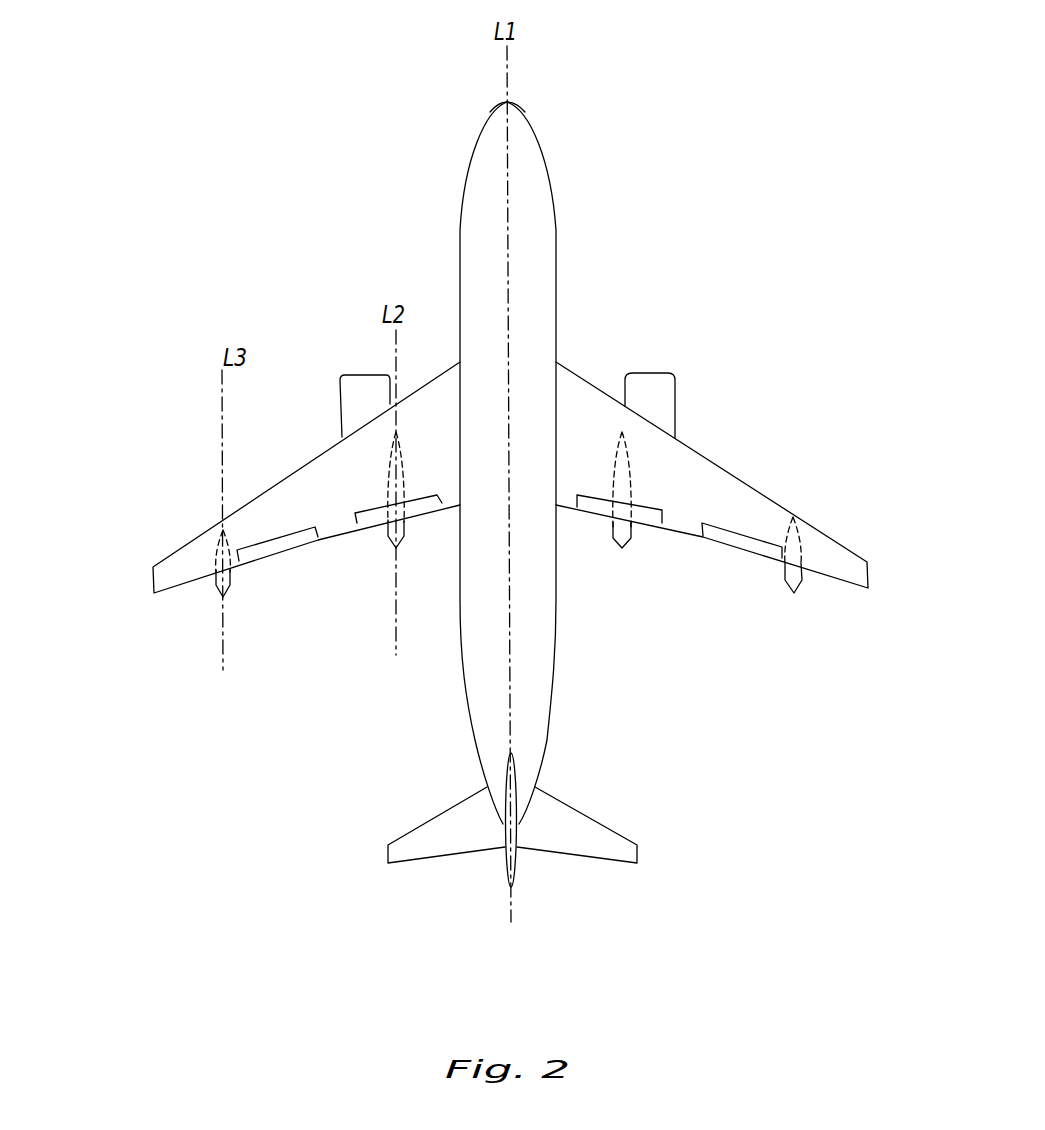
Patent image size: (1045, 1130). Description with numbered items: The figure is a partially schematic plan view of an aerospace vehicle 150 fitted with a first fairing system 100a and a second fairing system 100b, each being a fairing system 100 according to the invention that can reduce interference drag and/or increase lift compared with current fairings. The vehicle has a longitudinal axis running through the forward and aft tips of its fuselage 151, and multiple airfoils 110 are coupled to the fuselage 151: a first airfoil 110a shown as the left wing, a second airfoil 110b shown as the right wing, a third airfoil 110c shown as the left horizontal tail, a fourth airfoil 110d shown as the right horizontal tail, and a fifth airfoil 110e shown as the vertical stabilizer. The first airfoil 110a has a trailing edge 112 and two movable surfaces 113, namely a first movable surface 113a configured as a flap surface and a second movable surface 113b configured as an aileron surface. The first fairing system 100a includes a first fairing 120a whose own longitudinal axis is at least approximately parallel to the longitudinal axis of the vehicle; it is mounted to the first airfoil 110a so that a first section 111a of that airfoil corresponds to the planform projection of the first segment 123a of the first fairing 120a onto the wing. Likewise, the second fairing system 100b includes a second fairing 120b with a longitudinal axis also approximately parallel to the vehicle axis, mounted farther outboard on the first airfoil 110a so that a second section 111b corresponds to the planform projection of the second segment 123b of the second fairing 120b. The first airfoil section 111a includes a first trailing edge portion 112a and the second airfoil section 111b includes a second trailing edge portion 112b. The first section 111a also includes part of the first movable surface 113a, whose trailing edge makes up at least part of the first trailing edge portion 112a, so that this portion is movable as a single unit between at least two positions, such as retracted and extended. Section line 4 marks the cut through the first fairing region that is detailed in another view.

The fairing system 100 is at (321, 130).
The first fairing system 100a is at (345, 300).
The second fairing system 100b is at (181, 403).
The airfoils 110 is at (778, 708).
The first airfoil 110a is at (175, 584).
The second airfoil 110b is at (728, 492).
The third airfoil 110c is at (424, 850).
The fourth airfoil 110d is at (591, 828).
The fifth airfoil 110e is at (541, 878).
The first section of the first airfoil 111a is at (388, 498).
The second section of the first airfoil 111b is at (220, 560).
The trailing edge 112 is at (330, 550).
The first trailing edge portion 112a is at (402, 528).
The second trailing edge portion 112b is at (232, 594).
The movable surfaces 113 is at (340, 688).
The first movable surface 113a is at (375, 528).
The second movable surface 113b is at (276, 548).
The first fairing 120a is at (402, 545).
The second fairing 120b is at (212, 594).
The first segment of the first fairing 123a is at (388, 498).
The second segment of the second fairing 123b is at (217, 563).
The aerospace vehicle 150 is at (475, 102).
The fuselage 151 is at (557, 643).
The section line 4- 4 is at (386, 418).